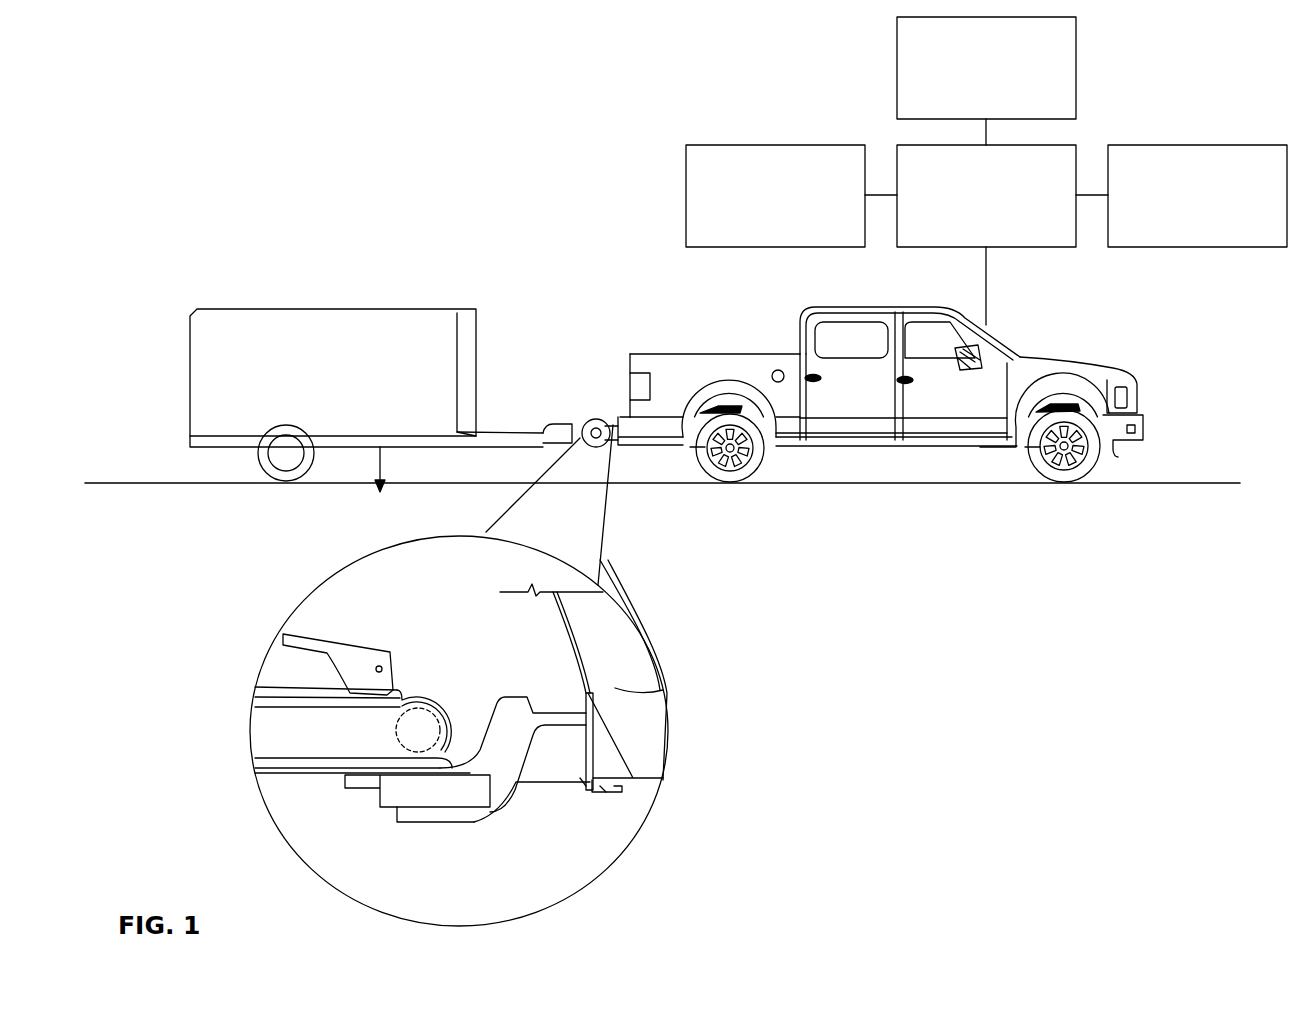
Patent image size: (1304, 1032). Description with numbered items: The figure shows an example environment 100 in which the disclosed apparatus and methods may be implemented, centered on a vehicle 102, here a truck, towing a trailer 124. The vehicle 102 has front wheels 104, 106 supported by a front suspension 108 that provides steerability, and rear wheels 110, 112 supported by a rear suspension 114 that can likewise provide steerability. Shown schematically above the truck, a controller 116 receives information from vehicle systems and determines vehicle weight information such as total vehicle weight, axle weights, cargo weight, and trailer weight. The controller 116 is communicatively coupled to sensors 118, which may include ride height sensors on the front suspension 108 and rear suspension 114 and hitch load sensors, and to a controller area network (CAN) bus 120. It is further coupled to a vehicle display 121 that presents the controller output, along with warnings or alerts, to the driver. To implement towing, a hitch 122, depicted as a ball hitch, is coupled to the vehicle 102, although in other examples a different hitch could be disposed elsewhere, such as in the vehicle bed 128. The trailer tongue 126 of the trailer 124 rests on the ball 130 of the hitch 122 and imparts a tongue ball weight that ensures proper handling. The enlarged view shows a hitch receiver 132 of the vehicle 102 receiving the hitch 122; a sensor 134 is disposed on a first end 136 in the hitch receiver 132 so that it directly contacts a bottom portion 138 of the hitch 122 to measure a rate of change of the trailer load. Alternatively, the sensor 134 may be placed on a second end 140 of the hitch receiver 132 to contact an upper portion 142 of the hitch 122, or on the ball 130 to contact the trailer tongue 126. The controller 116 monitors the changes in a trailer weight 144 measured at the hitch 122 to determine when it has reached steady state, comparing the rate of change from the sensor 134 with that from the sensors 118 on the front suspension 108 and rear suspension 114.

The example environment 100 is at (793, 117).
The vehicle 102 is at (793, 312).
The front wheel 104 is at (1085, 478).
The front wheel 106 is at (1040, 470).
The front suspension 108 is at (1062, 402).
The rear wheel 110 is at (703, 470).
The rear wheel 112 is at (770, 462).
The rear suspension 114 is at (716, 410).
The controller 116 is at (972, 220).
The sensors 118 is at (761, 220).
The controller area network (CAN) bus 120 is at (1183, 220).
The vehicle display 121 is at (972, 92).
The hitch 122 is at (503, 793).
The trailer 124 is at (303, 284).
The trailer tongue 126 is at (290, 733).
The vehicle bed 128 is at (632, 352).
The ball 130 is at (420, 702).
The hitch receiver 132 is at (620, 763).
The sensor 134 is at (612, 783).
The first end 136 is at (602, 790).
The bottom portion 138 is at (583, 782).
The second end 140 is at (585, 693).
The upper portion 142 is at (580, 717).
The trailer weight 144 is at (386, 468).